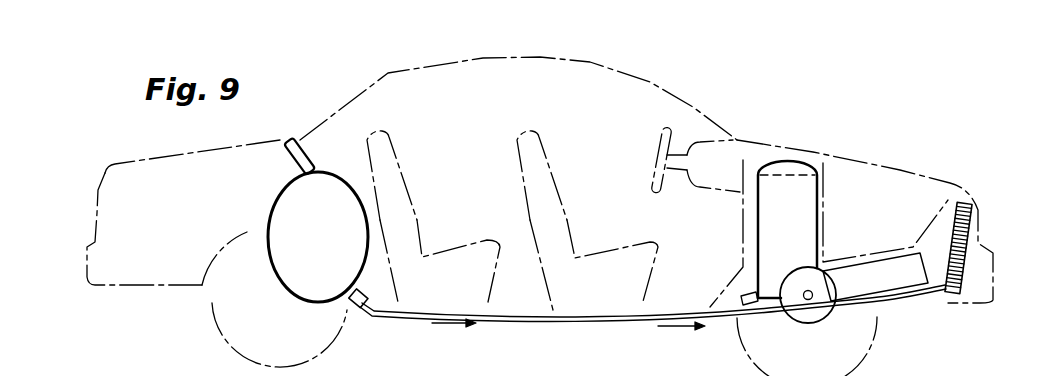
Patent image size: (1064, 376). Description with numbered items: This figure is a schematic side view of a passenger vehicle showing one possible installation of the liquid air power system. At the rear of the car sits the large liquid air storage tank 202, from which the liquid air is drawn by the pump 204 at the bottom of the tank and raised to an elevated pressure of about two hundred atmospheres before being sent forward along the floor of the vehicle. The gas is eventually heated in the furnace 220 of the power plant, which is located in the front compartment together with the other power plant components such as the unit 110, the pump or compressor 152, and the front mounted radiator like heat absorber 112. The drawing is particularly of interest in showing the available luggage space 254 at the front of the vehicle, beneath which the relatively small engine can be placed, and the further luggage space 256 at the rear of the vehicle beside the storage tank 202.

The luggage space at the rear of the vehicle 256 is at (191, 224).
The liquid air storage tank 202 is at (340, 241).
The pump 204 is at (358, 307).
The furnace 220 is at (790, 163).
The pump 152 is at (803, 317).
The reformer unit 110 is at (903, 293).
The radiator 112 is at (973, 220).
The luggage space at the front of the vehicle 254 is at (893, 183).